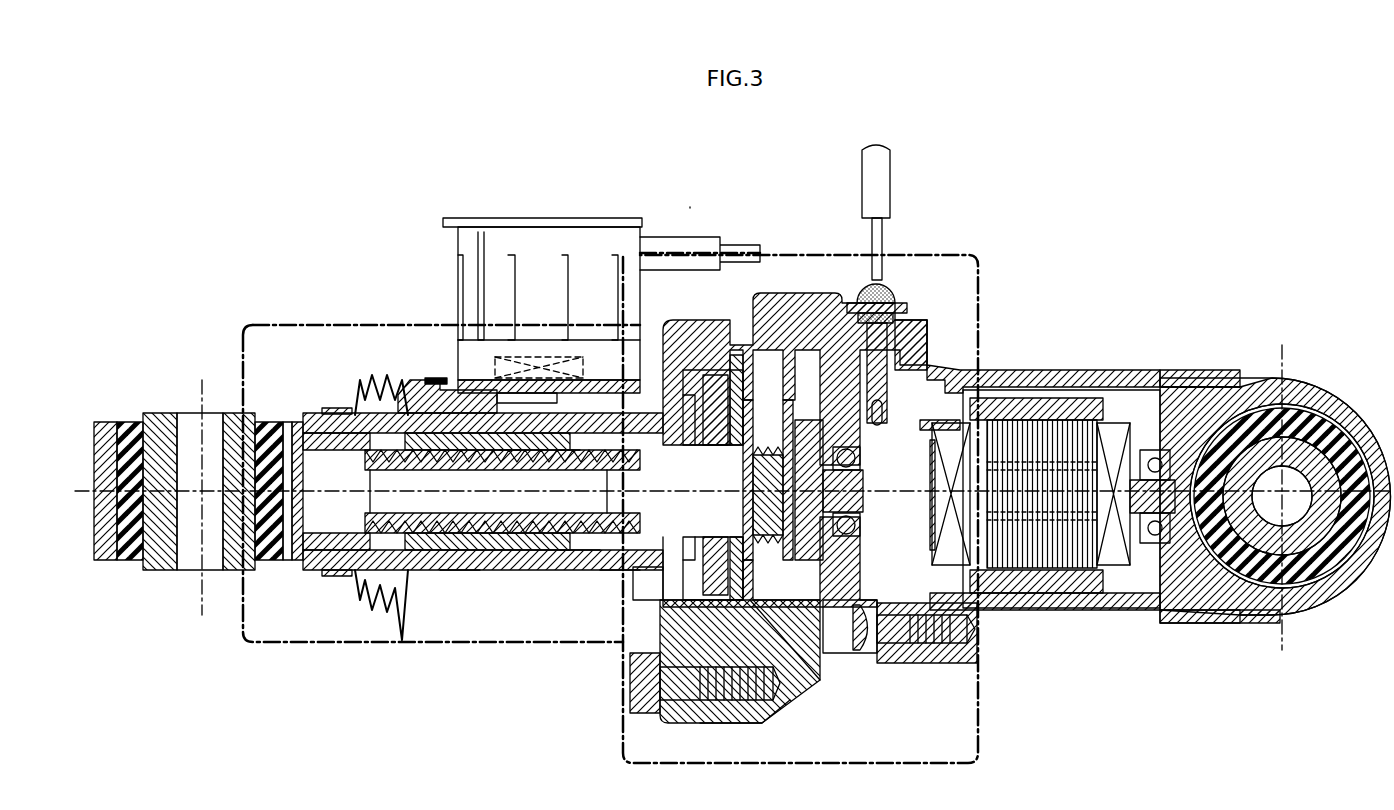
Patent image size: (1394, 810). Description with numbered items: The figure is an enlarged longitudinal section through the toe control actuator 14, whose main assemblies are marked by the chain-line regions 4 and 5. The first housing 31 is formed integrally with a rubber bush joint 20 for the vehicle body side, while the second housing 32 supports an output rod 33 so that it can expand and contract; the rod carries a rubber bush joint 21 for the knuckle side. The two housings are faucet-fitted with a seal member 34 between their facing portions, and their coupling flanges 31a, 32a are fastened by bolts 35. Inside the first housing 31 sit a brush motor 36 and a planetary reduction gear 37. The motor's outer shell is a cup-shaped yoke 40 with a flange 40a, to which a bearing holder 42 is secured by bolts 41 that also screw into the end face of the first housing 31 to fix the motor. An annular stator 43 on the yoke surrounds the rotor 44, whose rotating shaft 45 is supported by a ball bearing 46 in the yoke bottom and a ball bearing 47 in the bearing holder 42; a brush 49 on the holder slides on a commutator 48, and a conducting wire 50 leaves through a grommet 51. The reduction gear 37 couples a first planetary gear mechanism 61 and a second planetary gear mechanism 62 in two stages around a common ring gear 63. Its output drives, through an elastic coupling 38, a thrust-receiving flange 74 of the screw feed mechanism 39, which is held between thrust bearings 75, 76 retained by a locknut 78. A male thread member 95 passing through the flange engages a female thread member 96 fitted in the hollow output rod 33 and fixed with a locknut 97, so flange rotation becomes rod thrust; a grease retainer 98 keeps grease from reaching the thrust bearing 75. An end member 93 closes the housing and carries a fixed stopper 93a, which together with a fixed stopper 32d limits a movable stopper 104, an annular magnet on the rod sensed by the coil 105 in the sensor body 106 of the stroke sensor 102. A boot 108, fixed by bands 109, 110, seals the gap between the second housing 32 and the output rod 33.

The electric motor unit 4 is at (980, 254).
The linear motion unit 5 is at (305, 322).
The toe control actuator 14 is at (690, 208).
The rubber bush joint 20 is at (1297, 410).
The rubber bush joint 21 is at (160, 415).
The first housing 31 is at (1108, 370).
The coupling flange 31a is at (745, 722).
The second housing 32 is at (590, 602).
The coupling flange 32a is at (678, 720).
The fixed stopper 32d is at (552, 462).
The output rod 33 is at (372, 578).
The seal member 34 is at (742, 355).
The bolt 35 is at (645, 683).
The motor 36 is at (1069, 472).
The planetary reduction gear 37 is at (845, 640).
The elastic coupling 38 is at (660, 577).
The screw feed mechanism 39 is at (465, 605).
The yoke 40 is at (1128, 607).
The flange 40a is at (920, 375).
The bolt 41 is at (960, 650).
The bearing holder 42 is at (905, 315).
The stator 43 is at (1032, 405).
The rotor 44 is at (1065, 578).
The rotating shaft 45 is at (940, 515).
The ball bearing 46 is at (1170, 530).
The ball bearing 47 is at (848, 450).
The commutator 48 is at (935, 545).
The brush 49 is at (928, 420).
The conducting wire 50 is at (880, 232).
The grommet 51 is at (893, 295).
The first planetary gear mechanism 61 is at (860, 583).
The second planetary gear mechanism 62 is at (778, 460).
The ring gear 63 is at (792, 395).
The thrust-receiving flange 74 is at (645, 395).
The thrust bearing 75 is at (670, 420).
The thrust bearing 76 is at (720, 395).
The locknut 78 is at (770, 640).
The end member 93 is at (403, 392).
The fixed stopper 93a is at (492, 464).
The male thread member 95 is at (512, 462).
The female thread member 96 is at (425, 462).
The locknut 97 is at (580, 575).
The grease retainer 98 is at (615, 575).
The stroke sensor 102 is at (549, 272).
The movable stopper 104 is at (555, 380).
The coil 105 is at (530, 357).
The sensor body 106 is at (548, 232).
The boot 108 is at (375, 375).
The band 109 is at (432, 378).
The band 110 is at (330, 408).